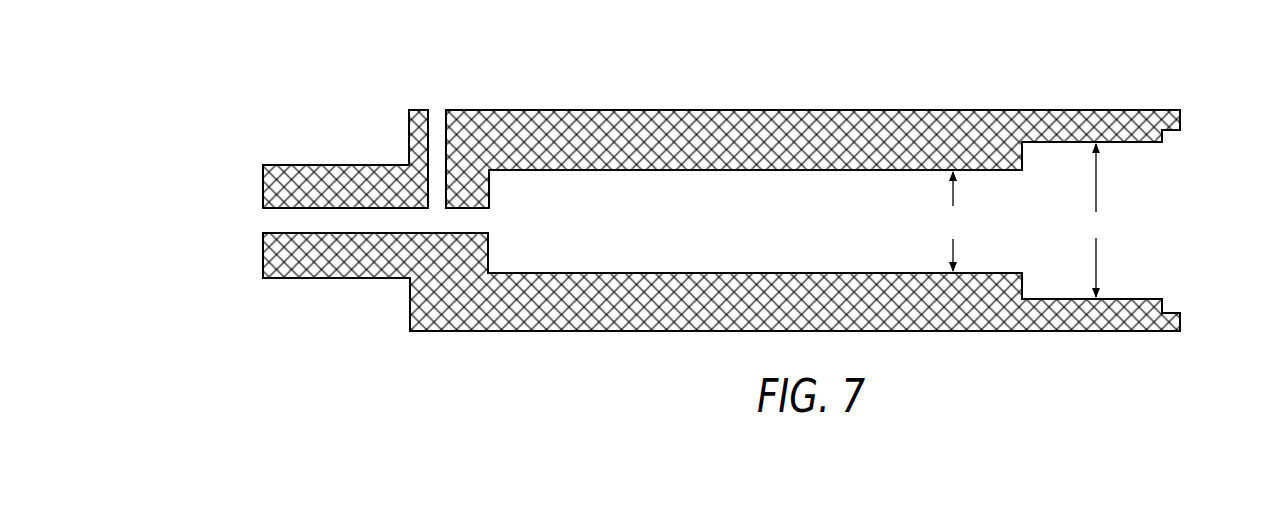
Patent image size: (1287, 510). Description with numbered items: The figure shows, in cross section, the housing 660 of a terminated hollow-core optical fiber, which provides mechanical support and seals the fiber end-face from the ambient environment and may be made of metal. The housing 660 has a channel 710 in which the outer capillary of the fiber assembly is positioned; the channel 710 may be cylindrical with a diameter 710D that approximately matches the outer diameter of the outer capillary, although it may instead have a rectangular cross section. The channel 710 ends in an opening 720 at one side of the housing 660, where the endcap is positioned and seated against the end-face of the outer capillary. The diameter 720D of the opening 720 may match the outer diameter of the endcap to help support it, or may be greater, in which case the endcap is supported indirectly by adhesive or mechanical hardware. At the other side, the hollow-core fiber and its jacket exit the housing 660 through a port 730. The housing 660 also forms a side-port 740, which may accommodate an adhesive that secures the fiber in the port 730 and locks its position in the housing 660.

The housing 660 is at (274, 60).
The channel 710 is at (775, 236).
The diameter of channel 710D is at (952, 221).
The opening 720 is at (1157, 209).
The diameter of opening 720D is at (1093, 220).
The port 730 is at (263, 223).
The side-port 740 is at (436, 110).